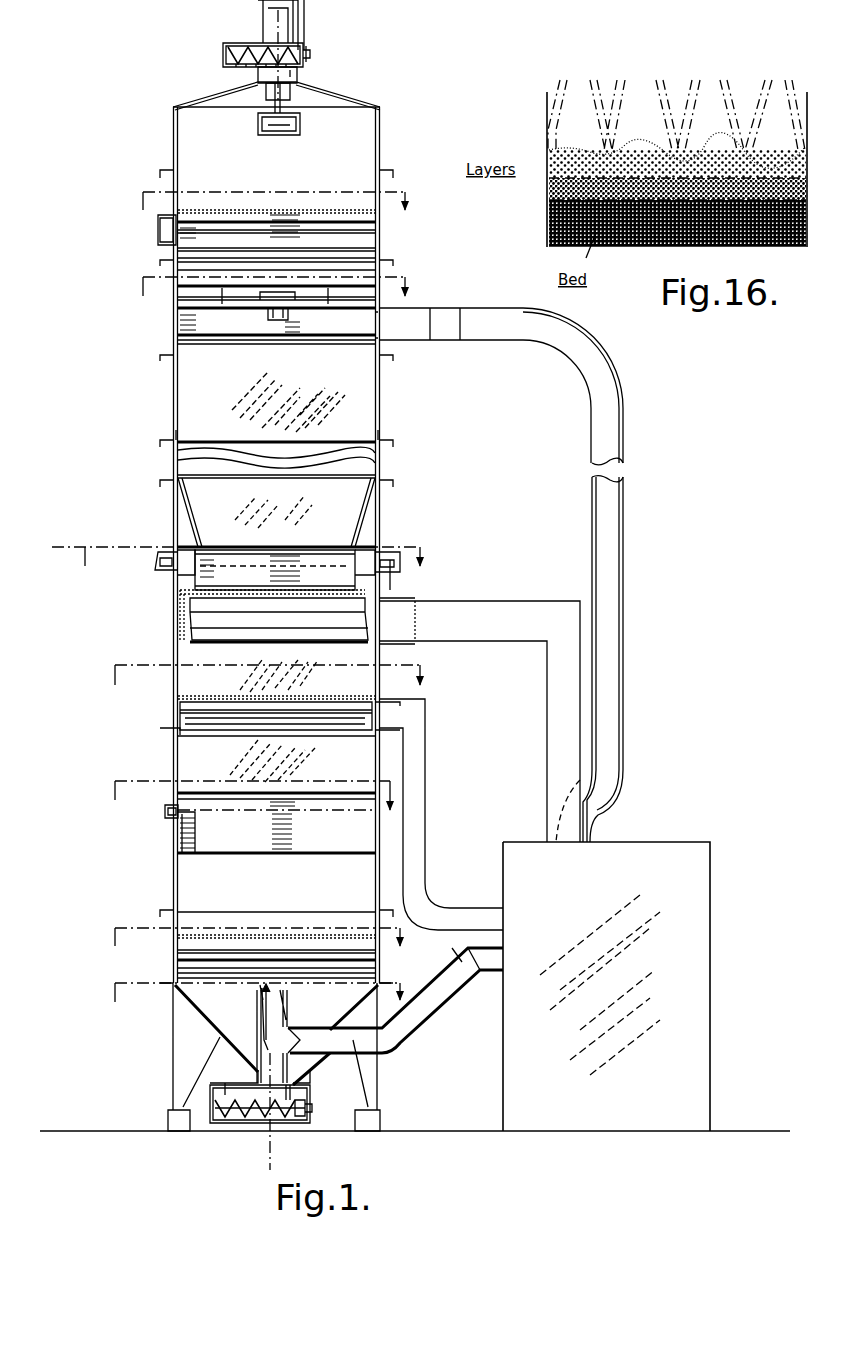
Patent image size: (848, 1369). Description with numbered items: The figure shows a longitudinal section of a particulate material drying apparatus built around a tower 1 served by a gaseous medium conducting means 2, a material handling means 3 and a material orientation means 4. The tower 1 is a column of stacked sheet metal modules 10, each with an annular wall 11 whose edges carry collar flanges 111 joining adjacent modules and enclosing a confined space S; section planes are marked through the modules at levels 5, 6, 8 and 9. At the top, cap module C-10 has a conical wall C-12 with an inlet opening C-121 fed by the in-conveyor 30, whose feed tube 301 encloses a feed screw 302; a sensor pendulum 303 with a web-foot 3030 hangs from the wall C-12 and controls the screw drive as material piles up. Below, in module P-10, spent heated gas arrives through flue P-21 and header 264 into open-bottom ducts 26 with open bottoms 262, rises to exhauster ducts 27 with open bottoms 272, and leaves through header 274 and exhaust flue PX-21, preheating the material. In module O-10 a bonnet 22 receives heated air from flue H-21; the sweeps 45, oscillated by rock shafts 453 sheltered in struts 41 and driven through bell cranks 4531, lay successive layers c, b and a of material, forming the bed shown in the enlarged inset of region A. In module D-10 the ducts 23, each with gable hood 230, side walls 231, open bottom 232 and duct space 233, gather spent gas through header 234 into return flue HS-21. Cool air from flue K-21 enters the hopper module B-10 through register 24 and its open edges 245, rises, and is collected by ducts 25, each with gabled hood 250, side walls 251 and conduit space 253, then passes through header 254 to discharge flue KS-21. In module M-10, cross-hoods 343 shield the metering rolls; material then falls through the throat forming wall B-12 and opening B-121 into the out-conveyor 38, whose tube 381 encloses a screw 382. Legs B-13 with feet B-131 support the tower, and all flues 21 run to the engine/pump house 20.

In FIG. 1, the tower 1 is at (135, 161).
In FIG. 1, the gaseous medium conducting means 2 is at (275, 25).
In FIG. 1, the material handling means 3 is at (313, 48).
In FIG. 1, the in-conveyor 30 is at (222, 52).
In FIG. 1, the feed screw 302 is at (228, 58).
In FIG. 1, the feed tube 301 is at (246, 70).
In FIG. 1, the sensor pendulum 303 is at (270, 101).
In FIG. 1, the web-foot 3030 is at (292, 135).
In FIG. 1, the inlet opening C-121 is at (292, 79).
In FIG. 1, the conical wall C-12 is at (352, 101).
In FIG. 1, the cap module C-10 is at (383, 135).
In FIG. 1, the material orientation means 4 is at (276, 202).
In FIG. 1, the exhaust flue PX-21 is at (160, 241).
In FIG. 1, the exhauster ducts 27 is at (356, 232).
In FIG. 1, the header 274 is at (170, 240).
In FIG. 1, the open bottoms 272 is at (380, 253).
In FIG. 1, the section line 5- 5 is at (276, 287).
In FIG. 1, the preheat module P-10 is at (166, 313).
In FIG. 1, the ducts 26 is at (208, 326).
In FIG. 1, the open bottom 262 is at (224, 340).
In FIG. 1, the header 264 is at (384, 322).
In FIG. 1, the modules 10 is at (166, 393).
In FIG. 1, the annular wall 11 is at (171, 416).
In FIG. 1, the confined space S is at (212, 423).
In FIG. 1, the collar flanges 111 is at (386, 443).
In FIG. 1, the auxiliary struts 41 is at (212, 546).
In FIG. 1, the rock shaft 453 is at (311, 549).
In FIG. 1, the section line 6- 6 is at (248, 557).
In FIG. 1, the orientation module O-10 is at (170, 581).
In FIG. 1, the bell crank 4531 is at (397, 581).
In FIG. 1, the bed stage A is at (170, 604).
In FIG. 1, the bonnet 22 is at (186, 613).
In FIG. 1, the sweeps 45 is at (222, 632).
In FIG. 16, the sweeps 45 is at (613, 121).
In FIG. 1, the flue H-21 is at (500, 624).
In FIG. 1, the flue P-21 is at (610, 398).
In FIG. 1, the flues 21 is at (630, 523).
In FIG. 1, the section line 8- 8 is at (272, 678).
In FIG. 1, the drying module D-10 is at (170, 696).
In FIG. 1, the ducts 23 is at (202, 712).
In FIG. 1, the side walls 231 is at (176, 730).
In FIG. 1, the gable hood 230 is at (306, 706).
In FIG. 1, the header 234 is at (379, 706).
In FIG. 1, the open bottom 232 is at (223, 730).
In FIG. 1, the duct space 233 is at (321, 716).
In FIG. 1, the return flue HS-21 is at (409, 754).
In FIG. 1, the section line 9- 9 is at (243, 809).
In FIG. 1, the gabled hood 250 is at (296, 802).
In FIG. 1, the discharge flue KS-21 is at (166, 816).
In FIG. 1, the header 254 is at (166, 826).
In FIG. 1, the ducts 25 is at (211, 838).
In FIG. 1, the conduit space 253 is at (251, 832).
In FIG. 1, the side walls 251 is at (311, 836).
In FIG. 1, the cross-hoods 343 is at (220, 942).
In FIG. 1, the metering module M-10 is at (166, 963).
In FIG. 1, the hopper module B-10 is at (190, 1010).
In FIG. 1, the legs B-13 is at (186, 1043).
In FIG. 1, the feet B-131 is at (169, 1113).
In FIG. 1, the register 24 is at (284, 1011).
In FIG. 1, the open edges 245 is at (258, 1052).
In FIG. 1, the flue K-21 is at (393, 1000).
In FIG. 1, the throat forming wall B-12 is at (257, 1084).
In FIG. 1, the outlet opening B-121 is at (289, 1085).
In FIG. 1, the out-conveyor 38 is at (211, 1120).
In FIG. 1, the screw 382 is at (212, 1101).
In FIG. 1, the tube 381 is at (291, 1124).
In FIG. 1, the engine/pump house 20 is at (680, 956).
In FIG. 16, the layer a is at (562, 164).
In FIG. 16, the layer b is at (570, 185).
In FIG. 16, the layer c is at (577, 206).